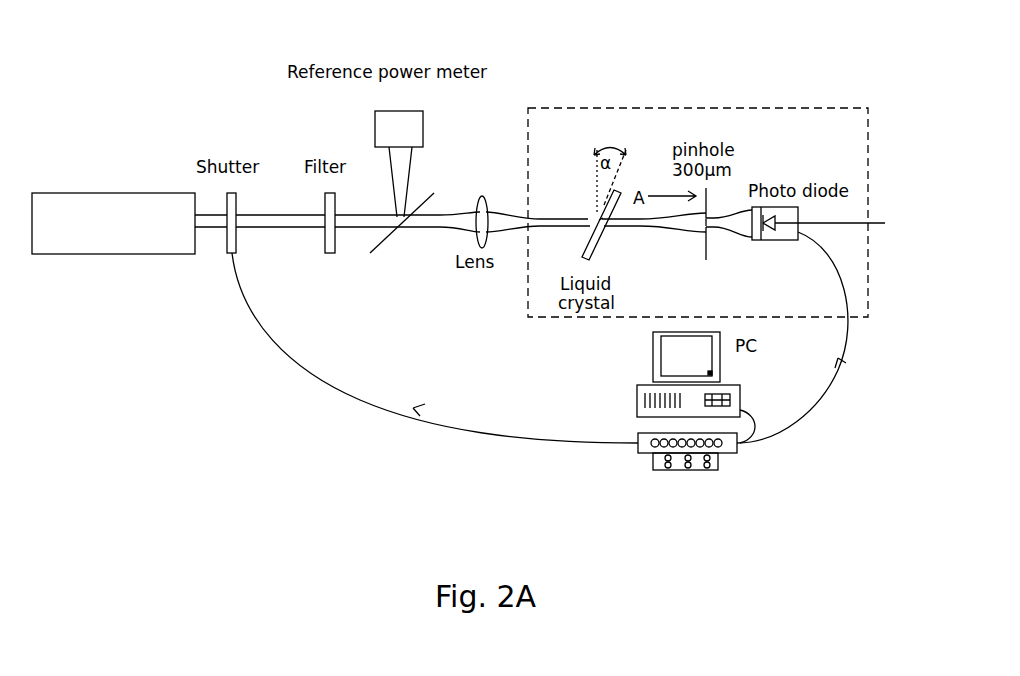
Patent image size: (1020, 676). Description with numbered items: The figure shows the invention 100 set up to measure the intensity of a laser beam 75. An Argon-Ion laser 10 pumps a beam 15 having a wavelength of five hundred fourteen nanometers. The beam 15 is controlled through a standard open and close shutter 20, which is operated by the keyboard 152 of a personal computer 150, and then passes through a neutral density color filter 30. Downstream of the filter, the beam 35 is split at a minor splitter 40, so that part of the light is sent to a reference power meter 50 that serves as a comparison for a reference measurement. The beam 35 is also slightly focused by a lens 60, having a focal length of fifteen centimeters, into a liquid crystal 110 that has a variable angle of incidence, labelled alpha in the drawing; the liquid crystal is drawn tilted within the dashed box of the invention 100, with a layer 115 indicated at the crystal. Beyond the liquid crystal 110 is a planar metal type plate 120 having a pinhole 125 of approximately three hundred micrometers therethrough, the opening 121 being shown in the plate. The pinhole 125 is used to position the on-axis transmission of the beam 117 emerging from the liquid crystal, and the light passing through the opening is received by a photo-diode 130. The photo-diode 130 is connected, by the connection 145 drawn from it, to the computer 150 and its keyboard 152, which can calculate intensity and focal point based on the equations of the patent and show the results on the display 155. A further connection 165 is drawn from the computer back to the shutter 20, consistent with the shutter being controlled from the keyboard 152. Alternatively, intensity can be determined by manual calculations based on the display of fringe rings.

The Argon-Ion laser 10 is at (120, 245).
The beam 15 is at (215, 227).
The shutter 20 is at (233, 210).
The neutral density color filter 30 is at (327, 257).
The beam 35 is at (357, 229).
The minor splitter 40 is at (383, 243).
The reference power meter 50 is at (415, 130).
The lens 60 is at (487, 203).
The laser beam 75 is at (513, 230).
The invention 100 is at (770, 75).
The liquid crystal 110 is at (595, 248).
The liquid crystal layer 115 is at (603, 227).
The beam 117 is at (688, 230).
The planar metal type plate 120 is at (707, 247).
The pinhole 121 is at (705, 253).
The pinhole 125 is at (720, 220).
The photo-diode 130 is at (836, 223).
The photo diode signal cable 145 is at (822, 398).
The personal computer 150 is at (740, 400).
The keyboard 152 is at (720, 465).
The display 155 is at (667, 355).
The shutter control cable 165 is at (497, 432).